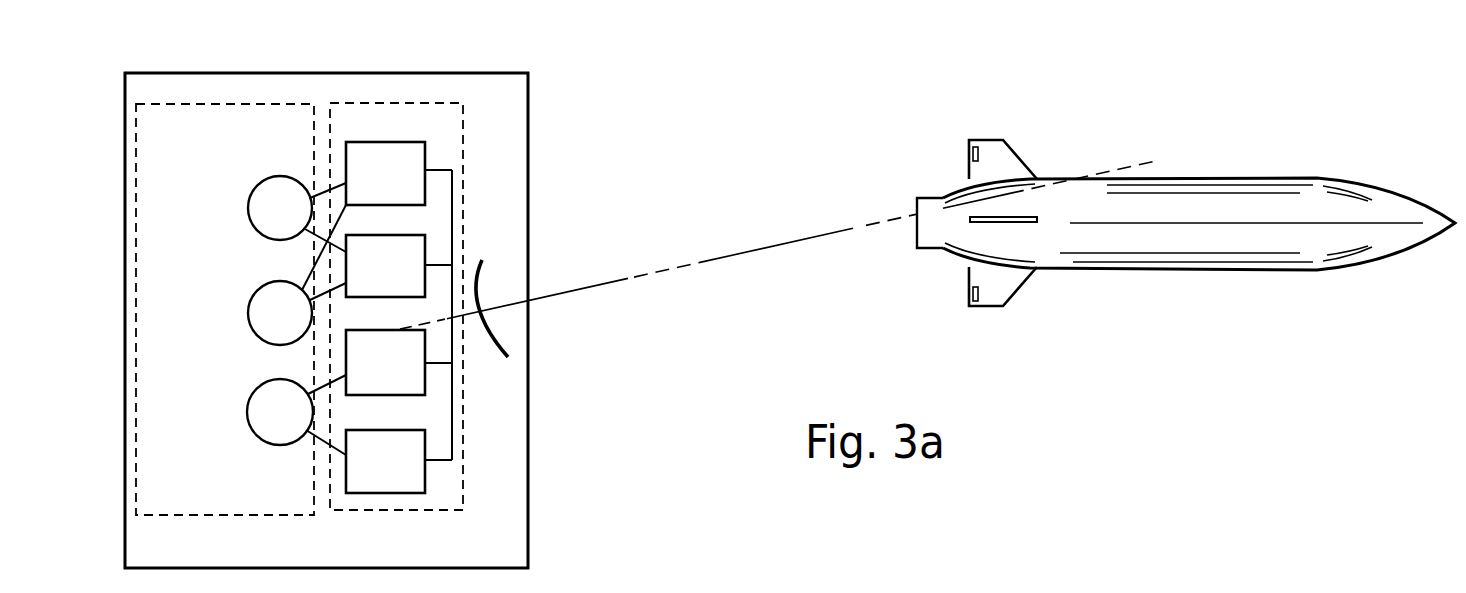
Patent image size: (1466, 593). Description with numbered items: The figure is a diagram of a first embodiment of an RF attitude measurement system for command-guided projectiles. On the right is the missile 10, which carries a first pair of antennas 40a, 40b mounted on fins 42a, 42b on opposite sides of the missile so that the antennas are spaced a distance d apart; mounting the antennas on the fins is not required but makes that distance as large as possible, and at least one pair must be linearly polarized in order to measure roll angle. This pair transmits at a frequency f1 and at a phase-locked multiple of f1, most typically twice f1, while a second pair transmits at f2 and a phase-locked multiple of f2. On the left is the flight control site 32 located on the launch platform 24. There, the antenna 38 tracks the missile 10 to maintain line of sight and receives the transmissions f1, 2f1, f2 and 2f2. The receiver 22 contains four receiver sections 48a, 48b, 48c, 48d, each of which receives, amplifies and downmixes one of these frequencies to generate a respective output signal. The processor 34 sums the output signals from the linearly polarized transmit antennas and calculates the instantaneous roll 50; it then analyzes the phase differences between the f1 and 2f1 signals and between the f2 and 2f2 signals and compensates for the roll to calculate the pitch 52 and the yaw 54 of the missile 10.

The missile 10 is at (1276, 175).
The receiver 22 is at (376, 103).
The launch platform 24 is at (238, 556).
The flight control site 32 is at (632, 110).
The processor 34 is at (203, 104).
The antenna 38 is at (507, 341).
The antenna 40a is at (971, 153).
The antenna 40b is at (971, 292).
The fin 42a is at (1008, 157).
The fin 42b is at (1008, 287).
The receiver section 48a is at (427, 145).
The receiver section 48b is at (427, 238).
The receiver section 48c is at (427, 375).
The receiver section 48d is at (405, 493).
The roll 50 is at (258, 314).
The pitch 52 is at (258, 209).
The yaw 54 is at (258, 412).